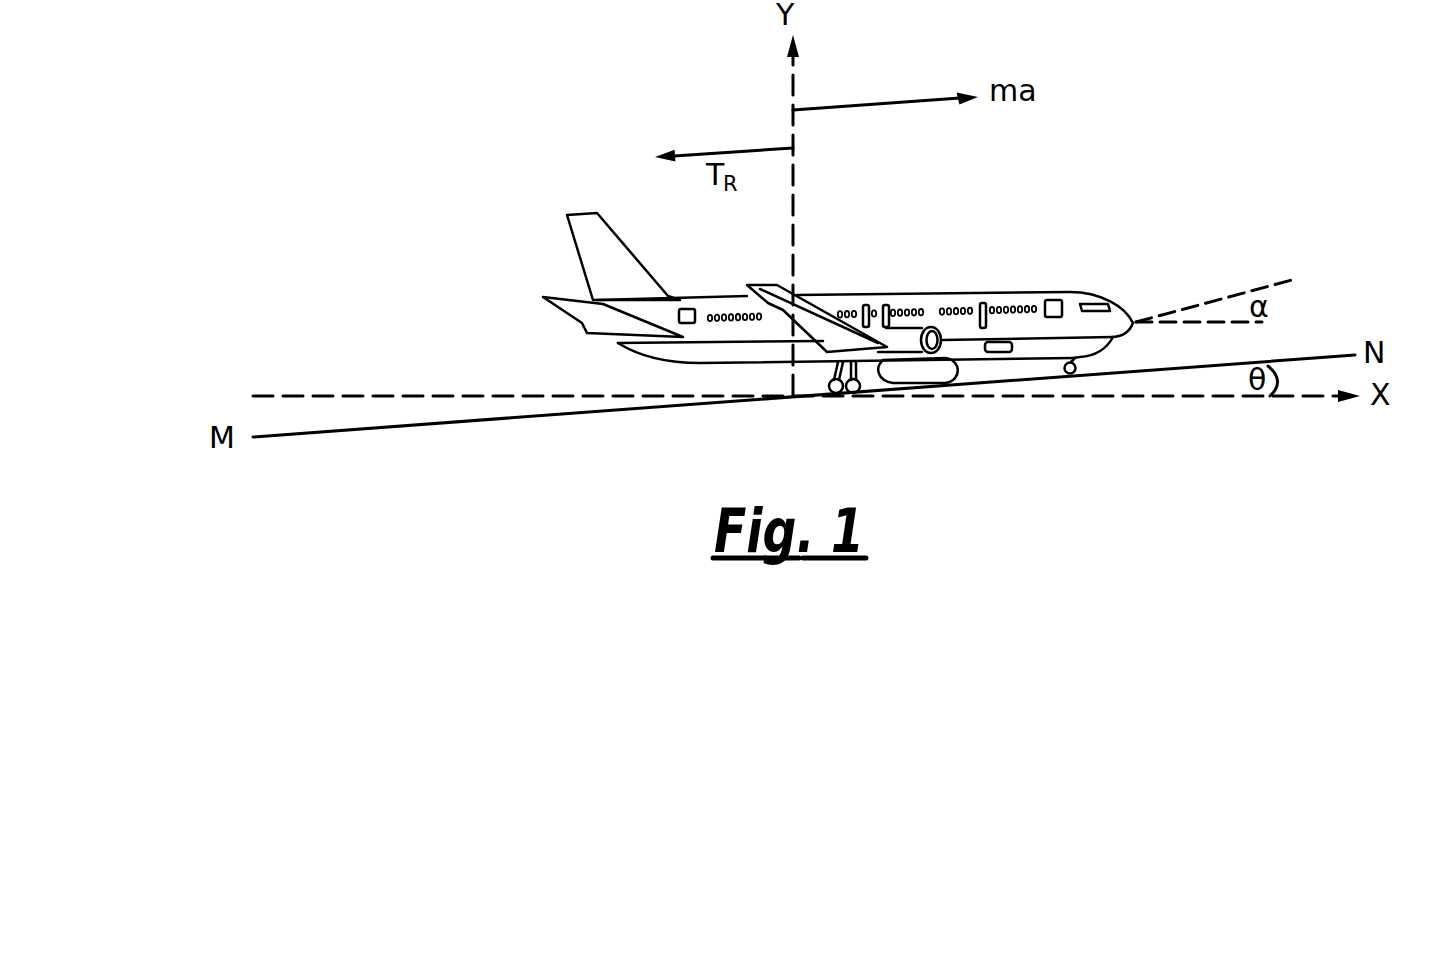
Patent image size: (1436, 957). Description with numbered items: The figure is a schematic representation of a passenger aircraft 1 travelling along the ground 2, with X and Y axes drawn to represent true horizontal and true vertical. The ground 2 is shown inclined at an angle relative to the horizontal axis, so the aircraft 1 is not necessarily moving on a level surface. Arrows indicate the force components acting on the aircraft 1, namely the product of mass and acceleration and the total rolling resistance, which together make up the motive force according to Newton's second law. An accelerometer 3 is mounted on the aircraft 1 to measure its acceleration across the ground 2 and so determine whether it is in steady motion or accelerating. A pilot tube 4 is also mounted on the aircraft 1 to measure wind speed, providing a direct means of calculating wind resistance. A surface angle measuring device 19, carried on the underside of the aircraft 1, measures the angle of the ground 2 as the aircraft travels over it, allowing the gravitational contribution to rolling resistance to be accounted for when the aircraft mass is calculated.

The passenger aircraft 1 is at (932, 292).
The ground 2 is at (587, 414).
The accelerometer 3 is at (1052, 298).
The pilot tube 4 is at (688, 308).
The surface angle measuring device 19 is at (997, 353).